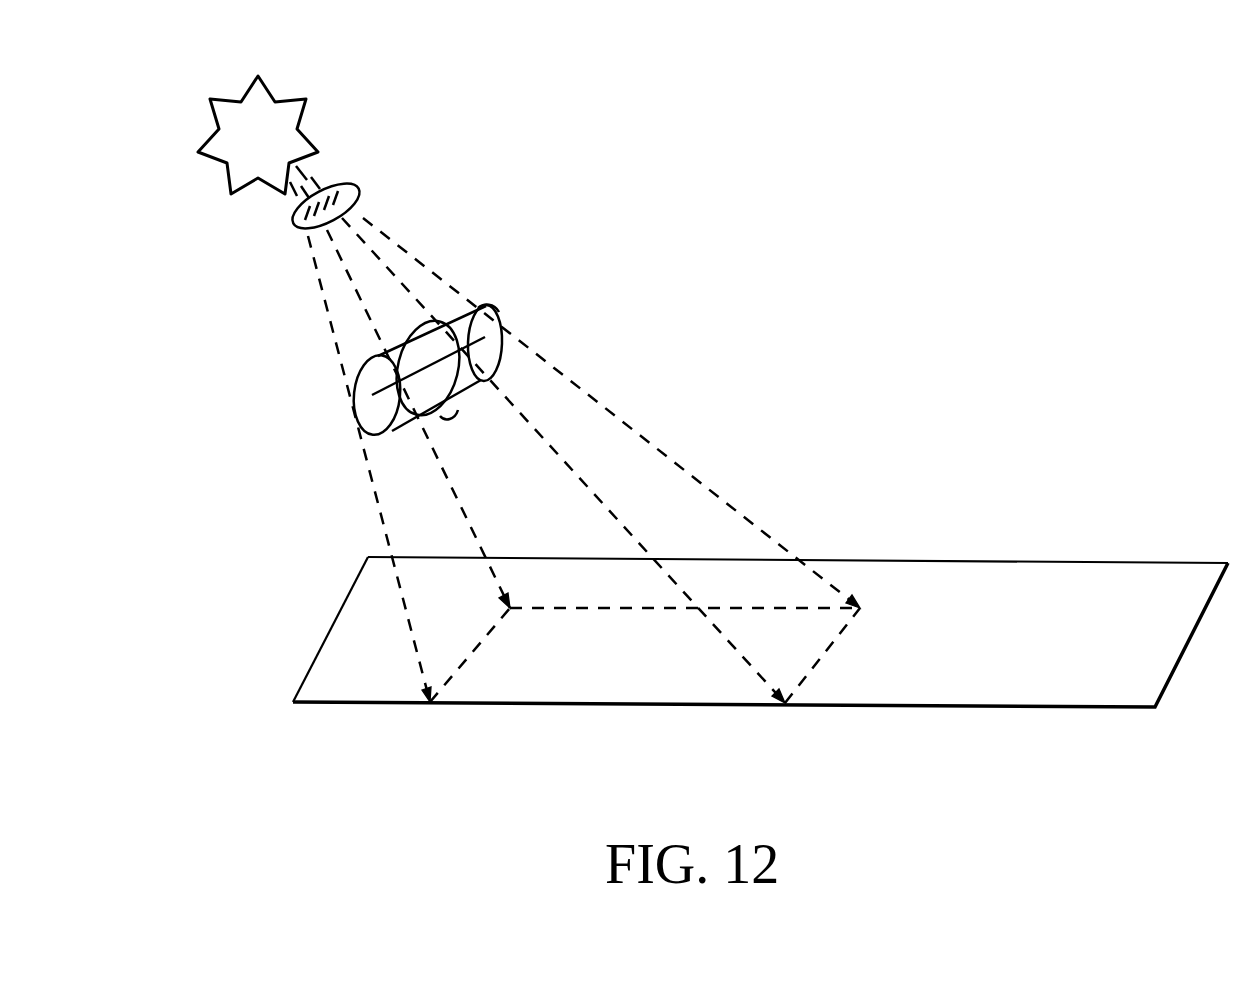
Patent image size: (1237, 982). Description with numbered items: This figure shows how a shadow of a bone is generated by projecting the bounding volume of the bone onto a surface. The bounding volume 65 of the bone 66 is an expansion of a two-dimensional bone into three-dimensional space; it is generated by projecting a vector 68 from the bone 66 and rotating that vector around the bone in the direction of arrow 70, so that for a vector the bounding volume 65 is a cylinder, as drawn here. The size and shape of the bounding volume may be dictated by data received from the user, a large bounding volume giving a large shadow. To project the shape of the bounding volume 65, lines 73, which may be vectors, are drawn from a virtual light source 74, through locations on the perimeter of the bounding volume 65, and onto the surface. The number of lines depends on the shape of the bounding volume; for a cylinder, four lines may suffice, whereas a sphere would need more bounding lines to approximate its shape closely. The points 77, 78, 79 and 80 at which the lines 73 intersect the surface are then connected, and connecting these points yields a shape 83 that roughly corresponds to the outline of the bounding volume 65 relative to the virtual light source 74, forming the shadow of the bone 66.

The virtual light source 74 is at (287, 100).
The lines 73 is at (357, 190).
The bounding volume 65 is at (365, 408).
The bone 66 is at (495, 306).
The vector 68 is at (395, 334).
The arrow 70 is at (450, 418).
The shape 83 is at (610, 705).
The point 77 is at (430, 704).
The point 78 is at (510, 609).
The point 79 is at (860, 608).
The point 80 is at (785, 705).